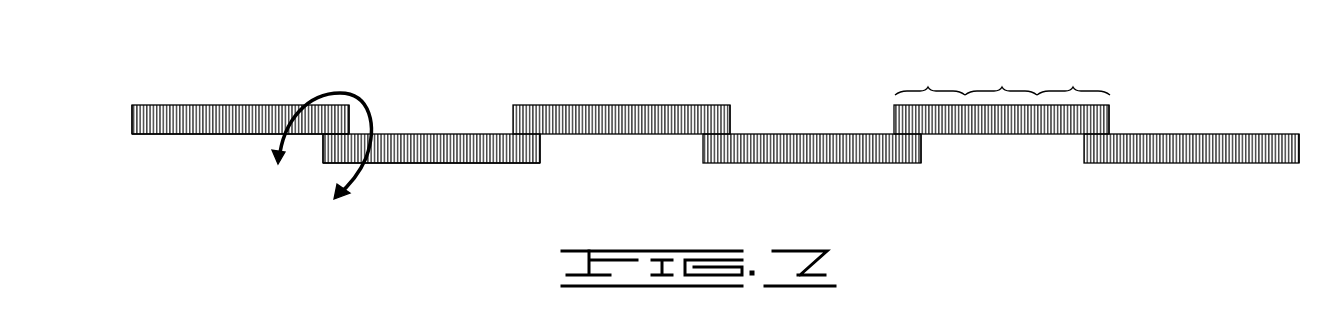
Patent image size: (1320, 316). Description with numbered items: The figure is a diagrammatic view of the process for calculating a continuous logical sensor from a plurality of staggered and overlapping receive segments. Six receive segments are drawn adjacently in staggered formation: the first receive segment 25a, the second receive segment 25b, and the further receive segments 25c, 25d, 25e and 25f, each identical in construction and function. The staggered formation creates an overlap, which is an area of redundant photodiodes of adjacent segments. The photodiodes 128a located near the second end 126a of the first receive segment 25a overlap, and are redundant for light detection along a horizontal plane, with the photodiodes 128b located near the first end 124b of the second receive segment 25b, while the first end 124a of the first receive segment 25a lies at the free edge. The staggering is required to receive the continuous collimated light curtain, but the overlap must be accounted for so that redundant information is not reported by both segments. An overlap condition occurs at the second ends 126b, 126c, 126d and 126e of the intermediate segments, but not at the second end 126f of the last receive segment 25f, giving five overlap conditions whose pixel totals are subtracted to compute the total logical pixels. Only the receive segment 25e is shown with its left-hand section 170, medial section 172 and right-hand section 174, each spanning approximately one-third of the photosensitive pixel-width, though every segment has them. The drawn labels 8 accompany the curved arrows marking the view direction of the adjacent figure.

The first receive segment 25a is at (218, 104).
The second receive segment 25b is at (412, 133).
The receive segment 25c is at (633, 136).
The receive segment 25d is at (813, 165).
The receive segment 25e is at (1013, 136).
The receive segment 25f is at (1205, 166).
The first end of first receive segment 124a is at (139, 117).
The first end of second receive segment 124b is at (325, 153).
The second end of first receive segment 126a is at (342, 117).
The second end of second receive segment 126b is at (532, 156).
The second end of third receive segment 126c is at (723, 118).
The second end of fourth receive segment 126d is at (912, 156).
The second end of fifth receive segment 126e is at (1105, 120).
The second end of last receive segment 126f is at (1290, 146).
The photodiodes of first receive segment 128a is at (218, 127).
The photodiodes of second receive segment 128b is at (450, 157).
The left-hand section 170 is at (928, 88).
The medial section 172 is at (1002, 88).
The right-hand section 174 is at (1073, 88).
The section view indicator for FIG. 8 is at (317, 156).